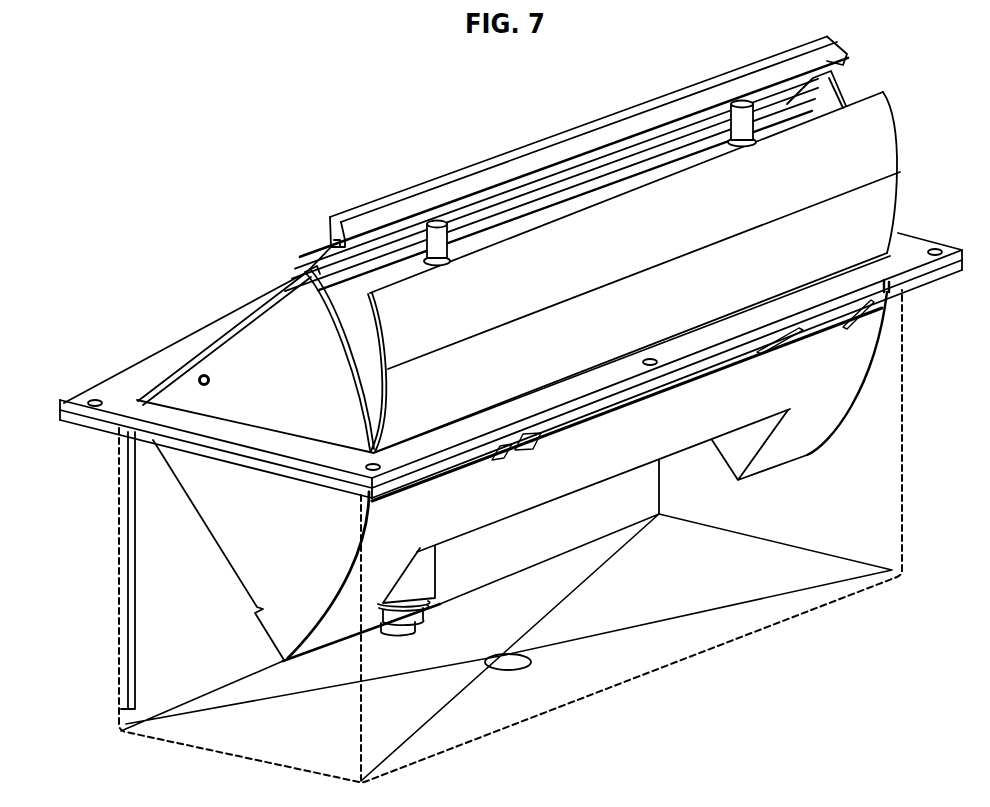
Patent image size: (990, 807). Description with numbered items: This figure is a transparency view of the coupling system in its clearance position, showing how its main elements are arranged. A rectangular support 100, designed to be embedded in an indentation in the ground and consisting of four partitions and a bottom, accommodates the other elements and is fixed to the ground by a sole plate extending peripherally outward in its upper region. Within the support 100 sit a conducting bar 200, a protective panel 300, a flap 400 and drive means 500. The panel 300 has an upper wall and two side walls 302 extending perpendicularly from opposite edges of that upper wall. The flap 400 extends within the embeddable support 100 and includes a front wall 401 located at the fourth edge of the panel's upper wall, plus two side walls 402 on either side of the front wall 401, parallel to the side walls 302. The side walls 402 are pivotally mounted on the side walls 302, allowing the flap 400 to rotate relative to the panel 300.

The support 100 is at (128, 550).
The conducting bar 200 is at (379, 210).
The panel 300 is at (253, 318).
The side walls 302 is at (250, 358).
The flap 400 is at (665, 272).
The front wall 401 is at (473, 288).
The side walls of the flap 402 is at (360, 326).
The drive means 500 is at (428, 568).